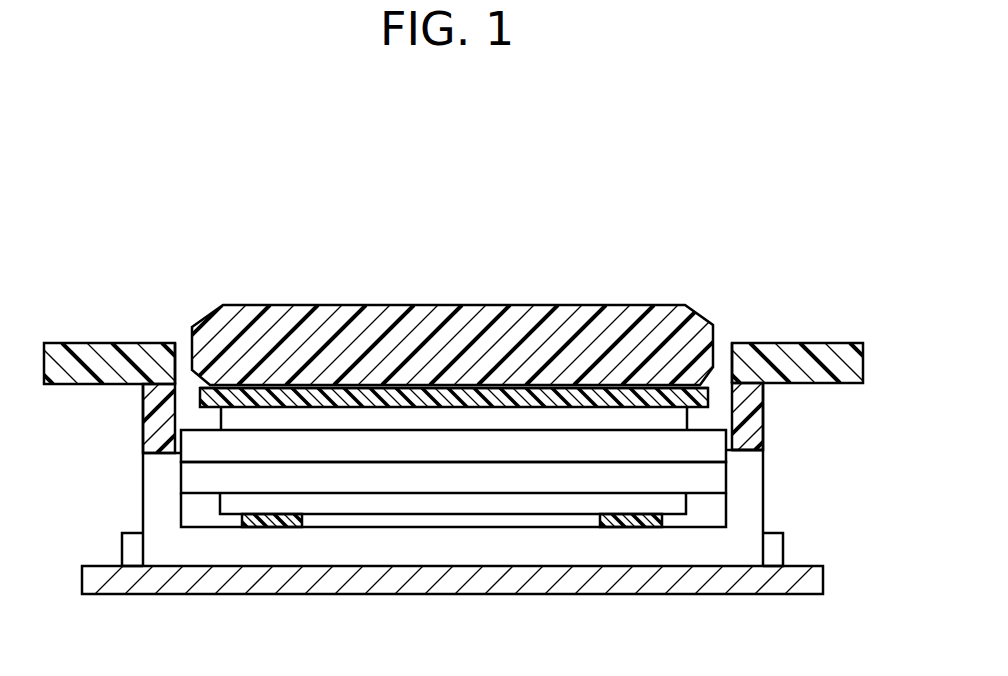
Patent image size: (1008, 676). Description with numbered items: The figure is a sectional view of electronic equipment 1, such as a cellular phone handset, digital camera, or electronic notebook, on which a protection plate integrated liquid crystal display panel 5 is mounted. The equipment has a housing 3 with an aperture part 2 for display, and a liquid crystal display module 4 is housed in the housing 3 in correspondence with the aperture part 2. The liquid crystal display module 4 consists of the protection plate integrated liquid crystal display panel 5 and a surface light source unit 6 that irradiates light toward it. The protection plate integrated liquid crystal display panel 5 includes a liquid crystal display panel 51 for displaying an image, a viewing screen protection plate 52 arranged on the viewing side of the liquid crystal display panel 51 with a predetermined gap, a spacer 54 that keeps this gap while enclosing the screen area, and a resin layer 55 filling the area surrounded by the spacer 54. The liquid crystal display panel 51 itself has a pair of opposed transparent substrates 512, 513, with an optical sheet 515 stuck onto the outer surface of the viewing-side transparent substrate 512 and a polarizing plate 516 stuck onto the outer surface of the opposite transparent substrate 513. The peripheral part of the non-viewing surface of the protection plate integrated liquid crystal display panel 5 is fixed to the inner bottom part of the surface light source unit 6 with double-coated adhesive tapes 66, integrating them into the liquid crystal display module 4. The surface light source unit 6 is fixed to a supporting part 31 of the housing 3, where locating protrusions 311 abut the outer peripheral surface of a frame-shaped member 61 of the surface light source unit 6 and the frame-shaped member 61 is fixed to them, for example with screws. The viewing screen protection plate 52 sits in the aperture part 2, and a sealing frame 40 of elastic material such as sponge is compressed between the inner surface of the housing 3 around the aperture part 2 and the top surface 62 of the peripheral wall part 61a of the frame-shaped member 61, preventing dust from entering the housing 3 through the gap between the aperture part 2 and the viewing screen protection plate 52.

The electronic equipment 1 is at (484, 136).
The aperture part 2 is at (176, 351).
The housing 3 is at (73, 343).
The liquid crystal display module 4 is at (453, 262).
The protection plate integrated liquid crystal display panel 5 is at (410, 528).
The surface light source unit 6 is at (779, 491).
The supporting part 31 is at (588, 588).
The locating protrusions 311 is at (136, 536).
The sealing frame 40 is at (146, 405).
The liquid crystal display panel 51 is at (201, 510).
The viewing screen protection plate 52 is at (352, 311).
The spacer 54 is at (197, 398).
The resin layer 55 is at (530, 398).
The frame-shaped member 61 is at (750, 515).
The peripheral wall part 61a is at (753, 465).
The top surface 62 is at (752, 443).
The double-coated adhesive tapes 66 is at (272, 527).
The transparent substrate 512 is at (193, 443).
The transparent substrate 513 is at (200, 473).
The optical sheet 515 is at (667, 417).
The polarizing plate 516 is at (530, 502).